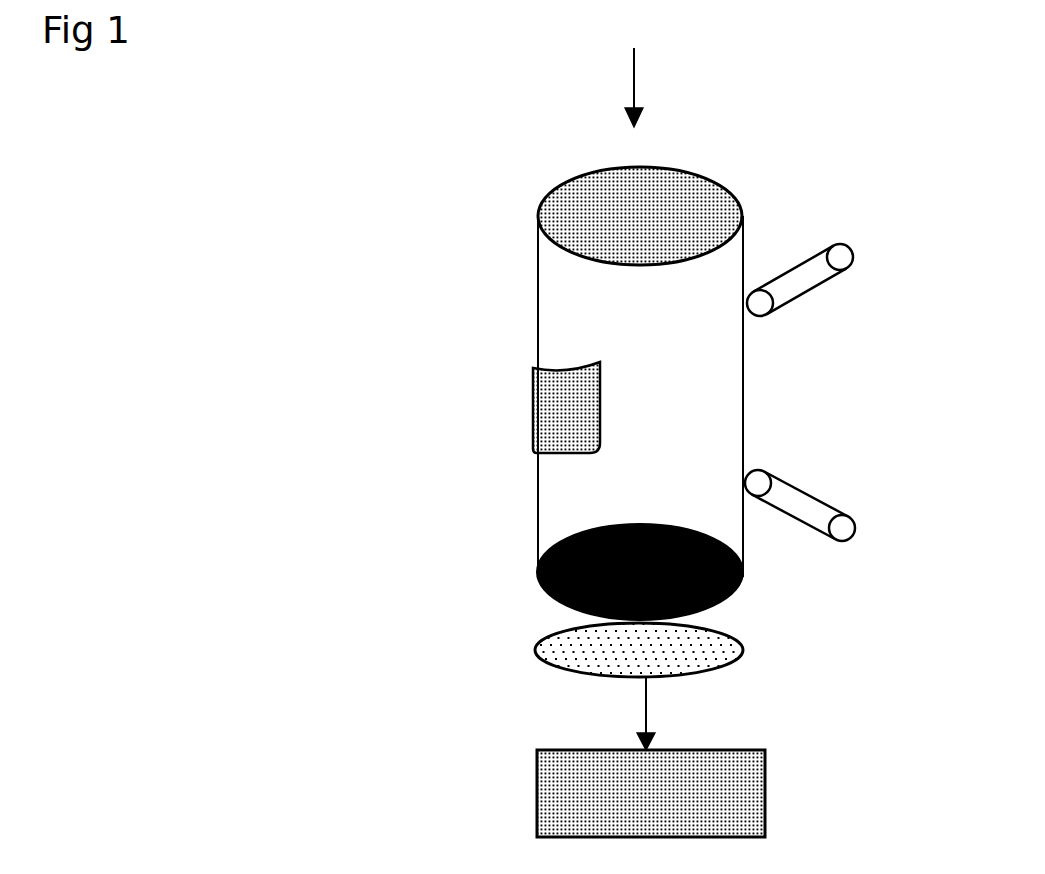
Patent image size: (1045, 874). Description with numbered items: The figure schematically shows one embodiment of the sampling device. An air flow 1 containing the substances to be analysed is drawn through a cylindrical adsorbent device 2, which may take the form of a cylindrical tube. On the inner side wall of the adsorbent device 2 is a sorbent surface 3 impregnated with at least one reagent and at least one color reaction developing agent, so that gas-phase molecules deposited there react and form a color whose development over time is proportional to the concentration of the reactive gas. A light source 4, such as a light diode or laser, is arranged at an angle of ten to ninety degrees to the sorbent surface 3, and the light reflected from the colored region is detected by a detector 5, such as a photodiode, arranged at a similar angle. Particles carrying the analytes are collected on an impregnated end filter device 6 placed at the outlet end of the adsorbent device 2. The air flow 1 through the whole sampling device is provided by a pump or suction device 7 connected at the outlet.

The air flow 1 is at (656, 85).
The cylindrical adsorbent device 2 is at (606, 393).
The sorbent surface 3 is at (543, 407).
The light source 4 is at (832, 275).
The detector 5 is at (831, 512).
The end filter device 6 is at (691, 650).
The pump or suction device 7 is at (702, 757).